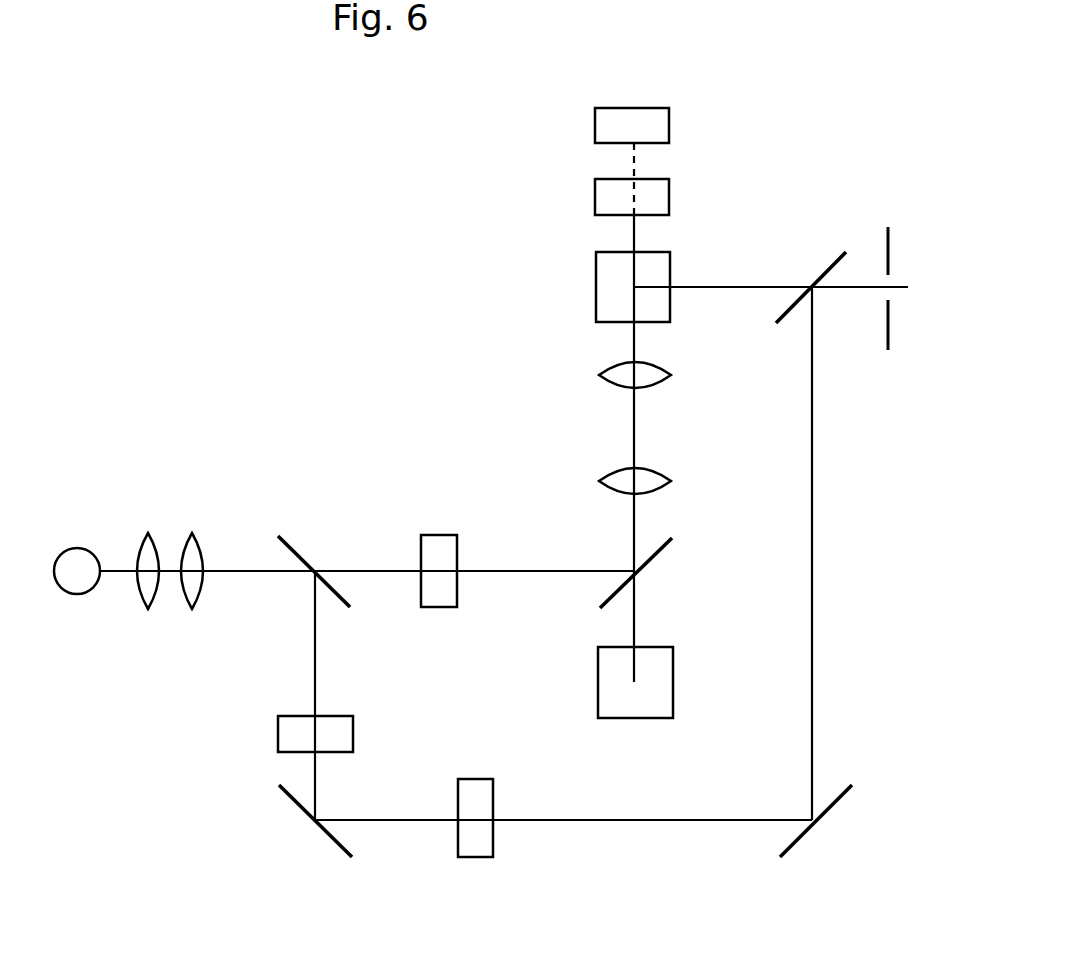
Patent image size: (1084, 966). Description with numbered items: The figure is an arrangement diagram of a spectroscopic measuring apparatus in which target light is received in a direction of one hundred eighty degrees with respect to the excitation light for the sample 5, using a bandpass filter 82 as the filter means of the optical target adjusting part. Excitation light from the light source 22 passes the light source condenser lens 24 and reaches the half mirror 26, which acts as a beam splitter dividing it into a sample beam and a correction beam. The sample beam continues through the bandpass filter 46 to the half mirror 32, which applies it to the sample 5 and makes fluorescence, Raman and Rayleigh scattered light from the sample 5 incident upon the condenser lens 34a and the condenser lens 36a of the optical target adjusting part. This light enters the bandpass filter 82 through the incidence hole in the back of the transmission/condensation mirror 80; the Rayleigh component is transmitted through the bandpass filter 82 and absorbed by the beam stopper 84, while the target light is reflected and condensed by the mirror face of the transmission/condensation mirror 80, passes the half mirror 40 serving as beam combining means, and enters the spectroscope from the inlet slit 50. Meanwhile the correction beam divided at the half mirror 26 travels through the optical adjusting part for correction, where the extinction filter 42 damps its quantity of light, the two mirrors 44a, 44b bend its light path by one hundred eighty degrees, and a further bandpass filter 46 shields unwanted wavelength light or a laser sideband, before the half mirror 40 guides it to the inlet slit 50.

The sample 5 is at (673, 672).
The light source 22 is at (75, 547).
The light source condenser lens 24 is at (168, 542).
The half mirror 26 is at (288, 540).
The half mirror 32 is at (658, 553).
The condenser lens 34a is at (600, 478).
The condenser lens 36a is at (599, 376).
The half mirror 40 is at (827, 263).
The extinction filter 42 is at (277, 733).
The mirror 44a is at (337, 847).
The mirror 44b is at (808, 832).
The bandpass filter 46 is at (433, 535).
The inlet slit 50 is at (885, 253).
The transmission/condensation mirror 80 is at (596, 290).
The bandpass filter 82 is at (595, 196).
The beam stopper 84 is at (595, 125).